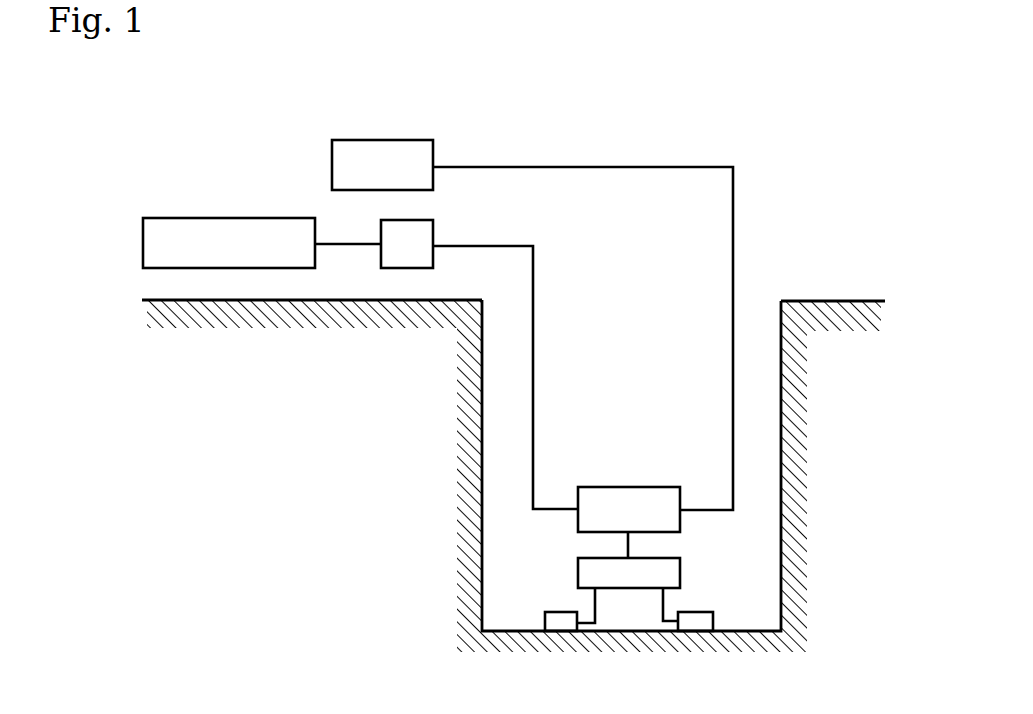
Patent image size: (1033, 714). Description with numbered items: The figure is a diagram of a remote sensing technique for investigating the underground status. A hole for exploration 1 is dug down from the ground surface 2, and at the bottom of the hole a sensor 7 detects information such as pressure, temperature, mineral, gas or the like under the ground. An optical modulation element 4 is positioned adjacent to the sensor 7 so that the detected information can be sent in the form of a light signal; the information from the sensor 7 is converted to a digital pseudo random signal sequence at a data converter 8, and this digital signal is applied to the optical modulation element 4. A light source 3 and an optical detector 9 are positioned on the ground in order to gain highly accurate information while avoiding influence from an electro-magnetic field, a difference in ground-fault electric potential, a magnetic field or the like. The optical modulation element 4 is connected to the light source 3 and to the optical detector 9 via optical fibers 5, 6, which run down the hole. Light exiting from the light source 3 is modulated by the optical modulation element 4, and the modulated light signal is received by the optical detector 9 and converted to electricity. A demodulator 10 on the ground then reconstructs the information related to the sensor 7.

The hole for exploration 1 is at (503, 487).
The ground surface 2 is at (197, 300).
The light source 3 is at (400, 163).
The optical modulation element 4 is at (605, 511).
The optical fiber 5 is at (735, 222).
The optical fiber 6 is at (528, 320).
The sensor 7 is at (693, 624).
The data converter 8 is at (643, 573).
The optical detector 9 is at (407, 246).
The demodulator 10 is at (230, 245).